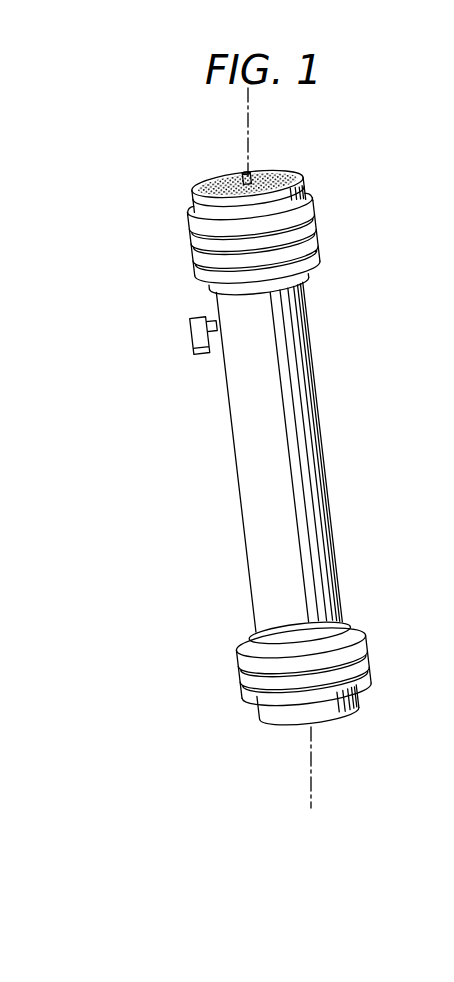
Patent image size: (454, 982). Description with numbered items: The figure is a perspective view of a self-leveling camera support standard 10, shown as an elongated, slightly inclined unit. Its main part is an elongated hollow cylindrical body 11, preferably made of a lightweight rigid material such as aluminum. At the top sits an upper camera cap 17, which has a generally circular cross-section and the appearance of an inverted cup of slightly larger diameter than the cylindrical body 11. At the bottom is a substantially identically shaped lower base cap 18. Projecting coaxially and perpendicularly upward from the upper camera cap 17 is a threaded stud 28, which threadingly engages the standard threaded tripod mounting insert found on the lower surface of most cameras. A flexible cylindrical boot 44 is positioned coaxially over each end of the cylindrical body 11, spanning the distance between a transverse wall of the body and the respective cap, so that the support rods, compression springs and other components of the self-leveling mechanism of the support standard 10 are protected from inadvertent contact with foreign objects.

The self-leveling camera support standard 10 is at (336, 345).
The elongated hollow cylindrical body 11 is at (317, 417).
The upper camera cap 17 is at (301, 183).
The lower base cap 18 is at (363, 705).
The threaded stud 28 is at (251, 173).
The flexible cylindrical boot 44 is at (318, 243).